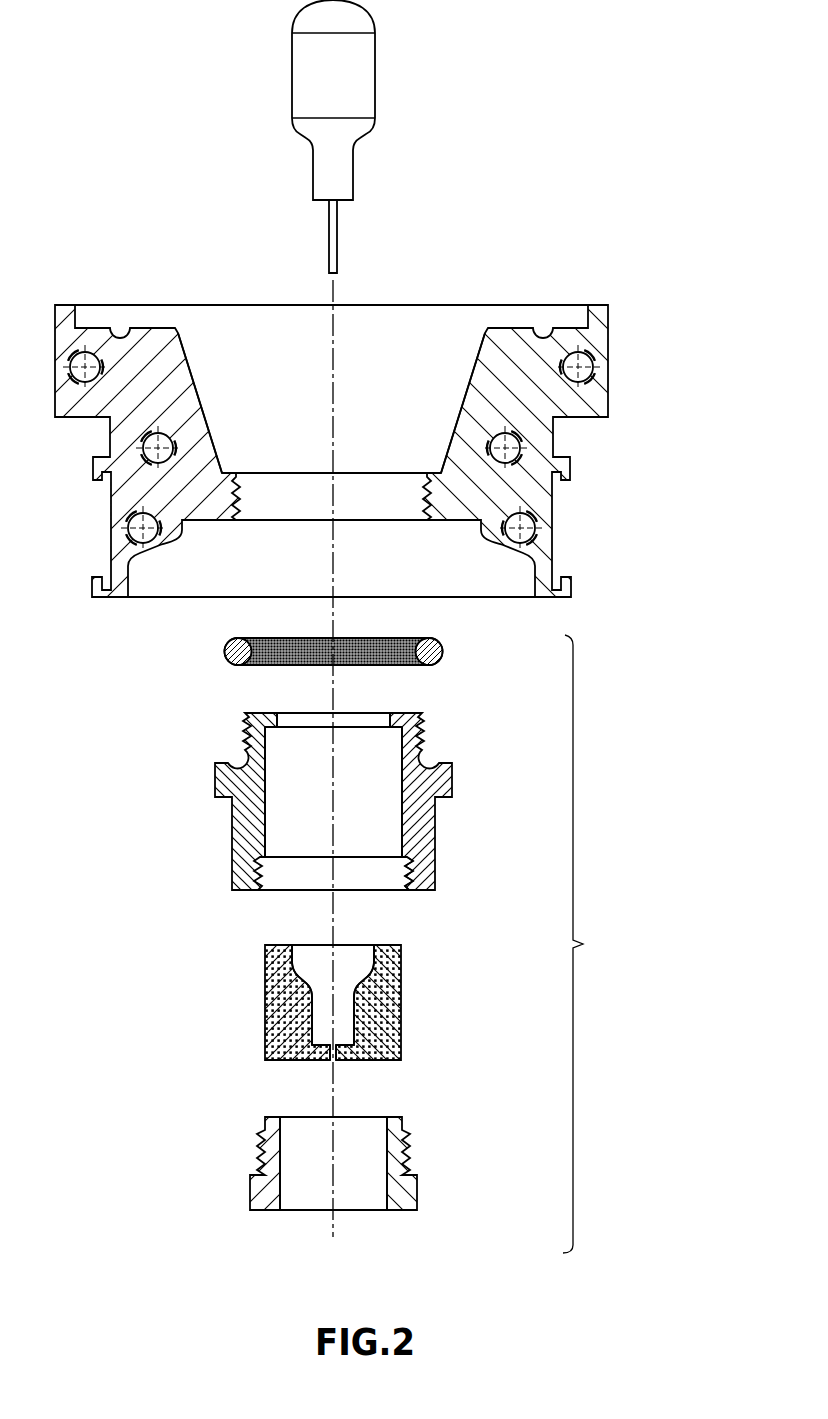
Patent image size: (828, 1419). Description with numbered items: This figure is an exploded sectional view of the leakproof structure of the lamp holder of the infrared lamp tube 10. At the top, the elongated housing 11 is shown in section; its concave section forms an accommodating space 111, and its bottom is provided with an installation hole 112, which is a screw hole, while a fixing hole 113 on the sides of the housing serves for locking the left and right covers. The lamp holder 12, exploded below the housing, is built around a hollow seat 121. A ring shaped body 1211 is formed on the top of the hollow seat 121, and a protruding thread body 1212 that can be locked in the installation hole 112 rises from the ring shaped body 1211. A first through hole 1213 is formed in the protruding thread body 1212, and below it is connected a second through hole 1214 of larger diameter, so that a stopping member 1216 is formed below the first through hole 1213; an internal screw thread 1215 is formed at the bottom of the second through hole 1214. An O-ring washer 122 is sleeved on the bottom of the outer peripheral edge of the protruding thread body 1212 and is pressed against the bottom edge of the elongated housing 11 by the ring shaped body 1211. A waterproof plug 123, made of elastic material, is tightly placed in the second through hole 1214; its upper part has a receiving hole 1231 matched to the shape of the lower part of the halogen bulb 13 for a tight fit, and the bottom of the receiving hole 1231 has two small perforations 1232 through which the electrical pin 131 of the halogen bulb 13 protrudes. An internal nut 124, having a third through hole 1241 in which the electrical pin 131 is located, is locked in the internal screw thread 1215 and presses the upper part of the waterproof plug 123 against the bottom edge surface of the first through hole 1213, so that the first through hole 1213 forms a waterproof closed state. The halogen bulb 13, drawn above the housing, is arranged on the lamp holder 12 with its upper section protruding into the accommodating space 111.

The infrared lamp tube 10 is at (113, 19).
The elongated housing 11 is at (608, 325).
The accommodating space 111 is at (443, 470).
The installation hole 112 is at (252, 475).
The fixing hole 113 is at (527, 425).
The lamp holder 12 is at (367, 944).
The hollow seat 121 is at (435, 850).
The ring shaped body 1211 is at (455, 775).
The protruding thread body 1212 is at (397, 712).
The first through hole 1213 is at (293, 718).
The second through hole 1214 is at (397, 817).
The internal screw thread 1215 is at (408, 877).
The stopping member 1216 is at (278, 728).
The O-ring washer 122 is at (443, 647).
The waterproof plug 123 is at (400, 1010).
The receiving hole 1231 is at (372, 957).
The small perforations 1232 is at (337, 1062).
The internal nut 124 is at (417, 1192).
The third through hole 1241 is at (365, 1187).
The halogen bulb 13 is at (363, 57).
The electrical pin 131 is at (338, 248).